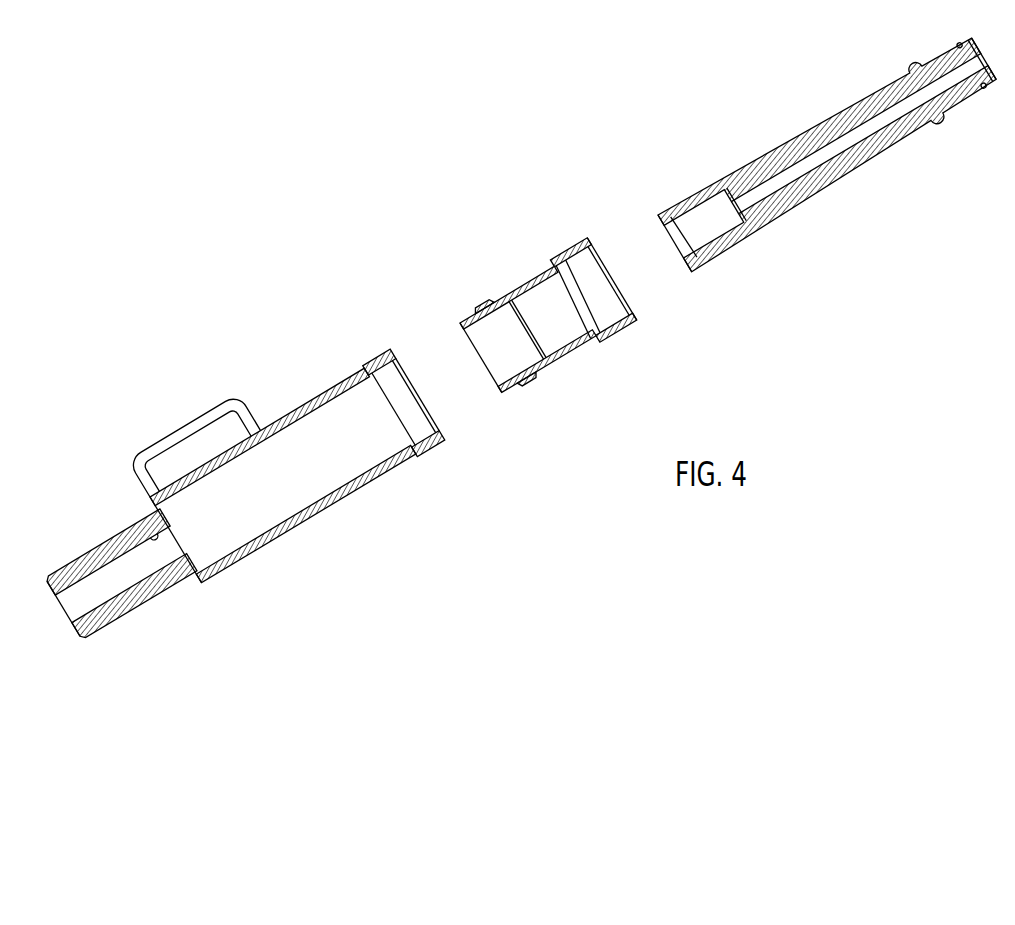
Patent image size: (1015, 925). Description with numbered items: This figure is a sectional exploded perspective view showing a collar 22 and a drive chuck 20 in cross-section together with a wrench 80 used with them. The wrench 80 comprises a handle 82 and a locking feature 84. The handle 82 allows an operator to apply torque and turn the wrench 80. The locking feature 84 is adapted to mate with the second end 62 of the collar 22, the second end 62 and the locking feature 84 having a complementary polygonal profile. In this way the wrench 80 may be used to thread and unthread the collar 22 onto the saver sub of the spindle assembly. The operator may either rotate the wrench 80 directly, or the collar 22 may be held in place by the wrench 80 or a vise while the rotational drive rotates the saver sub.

The drive chuck 20 is at (826, 151).
The collar 22 is at (537, 310).
The second end 62 is at (458, 325).
The wrench 80 is at (283, 459).
The handle 82 is at (177, 439).
The locking feature 84 is at (465, 411).